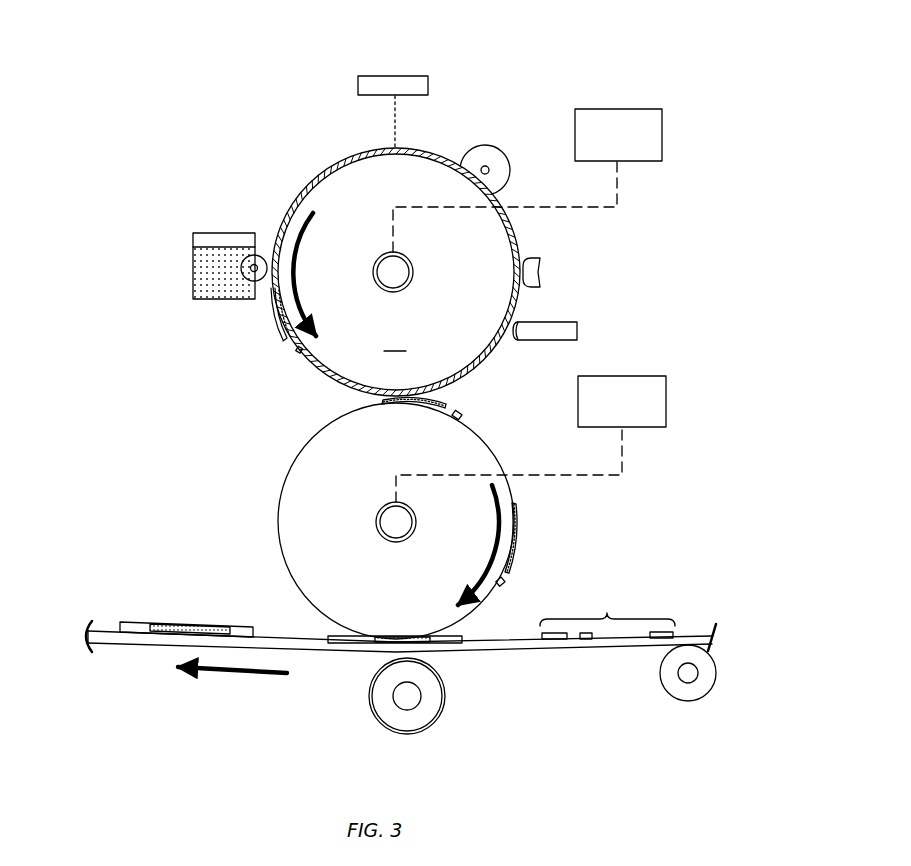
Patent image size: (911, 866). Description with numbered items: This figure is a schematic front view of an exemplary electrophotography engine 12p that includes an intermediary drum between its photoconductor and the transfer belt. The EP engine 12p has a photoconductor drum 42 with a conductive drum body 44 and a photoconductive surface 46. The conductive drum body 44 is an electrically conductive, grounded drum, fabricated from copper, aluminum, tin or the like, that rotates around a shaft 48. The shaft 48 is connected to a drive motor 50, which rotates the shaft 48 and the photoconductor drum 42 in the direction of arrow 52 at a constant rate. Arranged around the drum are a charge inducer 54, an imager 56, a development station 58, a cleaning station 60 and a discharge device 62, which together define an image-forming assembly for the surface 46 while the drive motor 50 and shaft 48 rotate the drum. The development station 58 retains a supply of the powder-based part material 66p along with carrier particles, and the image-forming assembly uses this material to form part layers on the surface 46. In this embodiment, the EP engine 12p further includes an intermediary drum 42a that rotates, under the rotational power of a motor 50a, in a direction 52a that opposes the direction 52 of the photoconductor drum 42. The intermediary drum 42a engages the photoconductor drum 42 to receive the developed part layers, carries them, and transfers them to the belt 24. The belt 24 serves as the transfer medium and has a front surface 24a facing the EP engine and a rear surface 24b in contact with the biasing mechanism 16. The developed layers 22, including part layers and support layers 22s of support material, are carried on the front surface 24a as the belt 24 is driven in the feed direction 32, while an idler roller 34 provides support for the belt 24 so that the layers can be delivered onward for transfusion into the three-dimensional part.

The EP engine 12p is at (143, 68).
The photoconductor drum 42 is at (283, 187).
The photoconductive surface 46 is at (340, 158).
The conductive drum body 44 is at (396, 341).
The shaft 48 is at (404, 270).
The direction of rotation 52 is at (300, 243).
The drive motor 50 is at (645, 109).
The motor 50a is at (648, 376).
The imager 56 is at (415, 76).
The charge inducer 54 is at (478, 150).
The discharge device 62 is at (540, 263).
The cleaning station 60 is at (562, 322).
The development station 58 is at (183, 229).
The part material 66p is at (212, 262).
The intermediary drum 42a is at (276, 467).
The direction of rotation of intermediary drum 52a is at (493, 503).
The transfer medium 24 is at (103, 690).
The front surface 24a is at (712, 633).
The rear surface 24b is at (577, 650).
The layers 22 is at (176, 614).
The support layers 22s is at (337, 707).
The feed direction 32 is at (227, 673).
The biasing mechanism 16 is at (425, 703).
The idler roller 34 is at (692, 697).